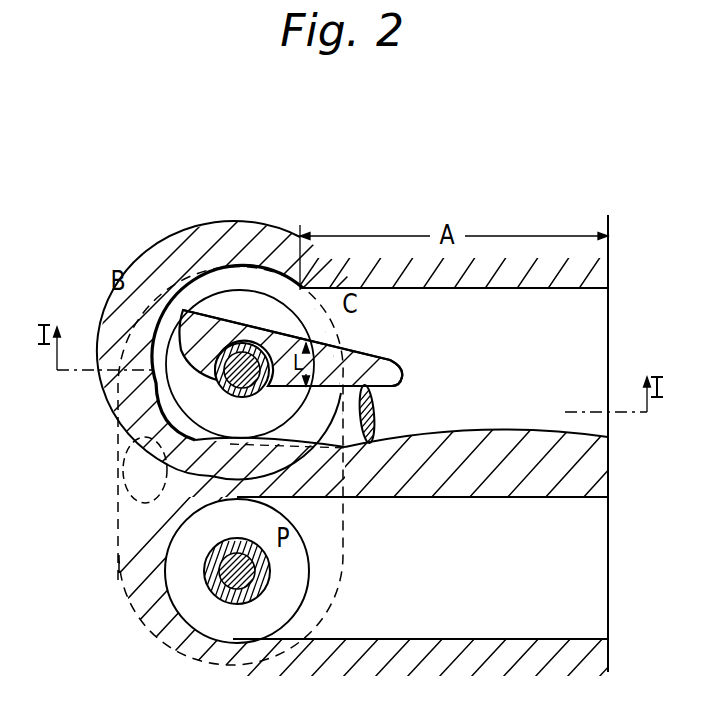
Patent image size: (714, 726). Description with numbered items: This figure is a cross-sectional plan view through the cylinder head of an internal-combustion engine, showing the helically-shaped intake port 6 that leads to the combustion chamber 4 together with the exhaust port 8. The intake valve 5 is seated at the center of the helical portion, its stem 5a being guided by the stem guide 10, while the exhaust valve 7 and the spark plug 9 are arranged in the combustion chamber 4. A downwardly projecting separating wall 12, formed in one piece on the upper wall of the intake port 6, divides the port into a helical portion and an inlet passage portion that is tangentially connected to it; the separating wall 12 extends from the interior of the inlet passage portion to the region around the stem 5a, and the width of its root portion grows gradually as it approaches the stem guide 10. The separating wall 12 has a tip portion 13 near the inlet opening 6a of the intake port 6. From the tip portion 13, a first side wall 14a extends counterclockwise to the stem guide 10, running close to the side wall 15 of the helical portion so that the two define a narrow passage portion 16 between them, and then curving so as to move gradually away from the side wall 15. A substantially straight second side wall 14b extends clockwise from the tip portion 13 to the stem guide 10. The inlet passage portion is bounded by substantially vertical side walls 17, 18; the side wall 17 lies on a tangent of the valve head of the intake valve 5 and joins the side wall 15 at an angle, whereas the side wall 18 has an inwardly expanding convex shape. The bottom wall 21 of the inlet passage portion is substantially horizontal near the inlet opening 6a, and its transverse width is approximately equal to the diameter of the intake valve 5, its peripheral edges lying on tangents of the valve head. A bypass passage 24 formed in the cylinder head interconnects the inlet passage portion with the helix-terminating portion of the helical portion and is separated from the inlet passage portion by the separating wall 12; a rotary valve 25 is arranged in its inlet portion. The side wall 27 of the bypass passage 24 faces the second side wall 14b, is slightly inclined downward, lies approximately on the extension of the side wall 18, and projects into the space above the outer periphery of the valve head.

The combustion chamber 4 is at (121, 582).
The intake valve 5 is at (232, 296).
The stem 5a is at (187, 412).
The helically-shaped intake port 6 is at (502, 374).
The inlet opening 6a is at (612, 329).
The exhaust valve 7 is at (190, 637).
The exhaust port 8 is at (478, 591).
The spark plug 9 is at (128, 484).
The stem guide 10 is at (212, 385).
The separating wall 12 is at (322, 392).
The tip portion 13 is at (414, 366).
The first side wall 14a is at (245, 327).
The second side wall 14b is at (295, 386).
The side wall of the helical portion 15 is at (180, 298).
The narrow passage portion 16 is at (190, 294).
The side wall of the inlet passage portion 17 is at (503, 293).
The side wall of the inlet passage portion 18 is at (500, 424).
The bottom wall 21 is at (595, 428).
The bypass passage 24 is at (336, 430).
The rotary valve 25 is at (387, 419).
The side wall of the bypass passage 27 is at (205, 491).